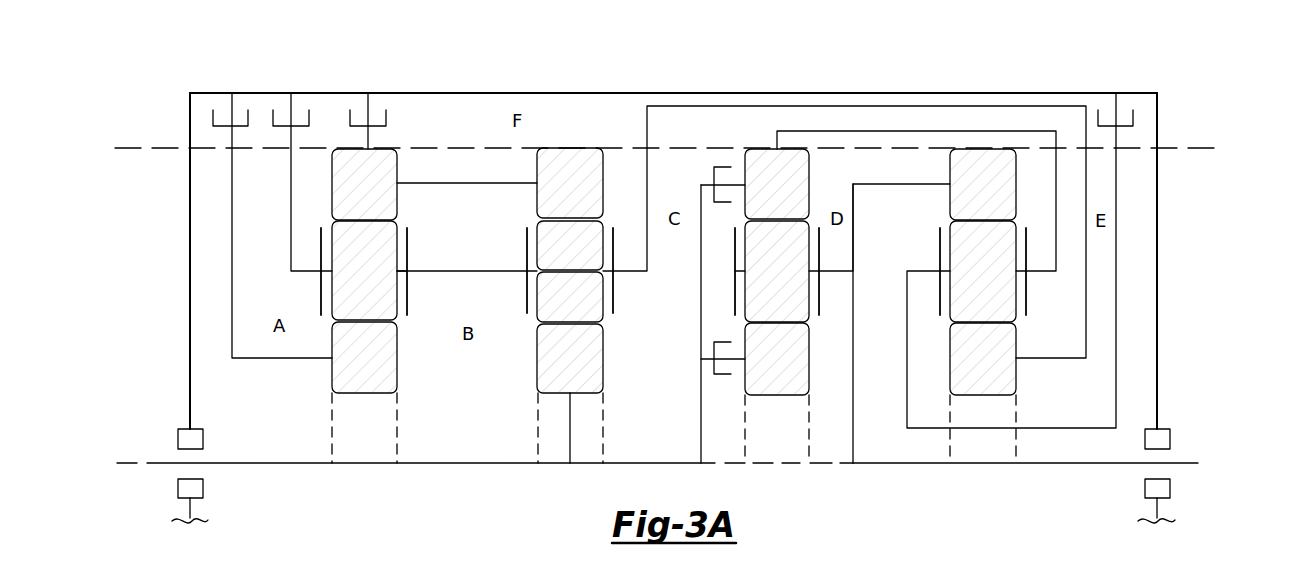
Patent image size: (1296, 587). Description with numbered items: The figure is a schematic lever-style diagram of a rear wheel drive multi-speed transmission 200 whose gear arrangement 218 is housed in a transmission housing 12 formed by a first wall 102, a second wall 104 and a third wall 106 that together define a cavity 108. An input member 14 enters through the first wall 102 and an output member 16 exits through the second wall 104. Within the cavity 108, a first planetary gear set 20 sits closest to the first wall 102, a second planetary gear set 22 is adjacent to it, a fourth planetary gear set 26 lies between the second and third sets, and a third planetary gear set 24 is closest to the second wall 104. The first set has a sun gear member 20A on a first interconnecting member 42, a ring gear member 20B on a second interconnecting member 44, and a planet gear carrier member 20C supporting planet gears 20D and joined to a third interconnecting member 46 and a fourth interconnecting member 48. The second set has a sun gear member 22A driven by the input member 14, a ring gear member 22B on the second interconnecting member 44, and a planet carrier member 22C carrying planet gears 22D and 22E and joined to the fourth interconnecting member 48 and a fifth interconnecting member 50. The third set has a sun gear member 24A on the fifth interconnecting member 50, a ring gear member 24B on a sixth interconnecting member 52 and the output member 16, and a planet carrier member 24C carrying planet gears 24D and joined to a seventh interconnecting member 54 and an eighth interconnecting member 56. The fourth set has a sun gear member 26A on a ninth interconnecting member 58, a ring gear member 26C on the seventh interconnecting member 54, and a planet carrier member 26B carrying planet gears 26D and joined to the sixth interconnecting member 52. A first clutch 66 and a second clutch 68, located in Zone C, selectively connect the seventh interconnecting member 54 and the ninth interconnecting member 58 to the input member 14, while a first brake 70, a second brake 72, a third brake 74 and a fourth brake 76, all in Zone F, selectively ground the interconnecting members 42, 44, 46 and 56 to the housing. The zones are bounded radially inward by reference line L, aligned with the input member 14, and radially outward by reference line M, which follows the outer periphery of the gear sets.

The transmission housing 12 is at (1157, 243).
The input shaft or member 14 is at (168, 462).
The output shaft or member 16 is at (1115, 466).
The first planetary gear set 20 is at (396, 348).
The sun gear member 20A is at (377, 371).
The ring gear member 20B is at (377, 197).
The planet gear carrier member 20C is at (408, 237).
The planet gears 20D is at (377, 282).
The second planetary gear set 22 is at (583, 348).
The sun gear member 22A is at (583, 371).
The ring gear member 22B is at (583, 196).
The planet carrier member 22C is at (614, 232).
The planet gears 22D is at (583, 257).
The planet gears 22E is at (583, 309).
The third planetary gear set 24 is at (1007, 348).
The sun gear member 24A is at (996, 372).
The ring gear member 24B is at (996, 197).
The planet carrier member 24C is at (1026, 287).
The planet gears 24D is at (996, 283).
The fourth planetary gear set 26 is at (790, 348).
The sun gear member 26A is at (790, 372).
The planet carrier member 26B is at (820, 300).
The ring gear member 26C is at (790, 197).
The planet gears 26D is at (790, 283).
The first shaft or interconnecting member 42 is at (232, 215).
The second shaft or interconnecting member 44 is at (368, 142).
The third shaft or interconnecting member 46 is at (291, 197).
The fourth shaft or interconnecting member 48 is at (505, 273).
The fifth shaft or interconnecting member 50 is at (680, 106).
The sixth shaft or interconnecting member 52 is at (838, 270).
The seventh shaft or interconnecting member 54 is at (846, 131).
The eighth shaft or interconnecting member 56 is at (1116, 196).
The ninth shaft or interconnecting member 58 is at (742, 380).
The first clutch 66 is at (714, 178).
The second clutch 68 is at (714, 348).
The first brake 70 is at (213, 120).
The second brake 72 is at (386, 118).
The third brake 74 is at (309, 118).
The fourth brake 76 is at (1133, 118).
The first wall or structural member 102 is at (190, 262).
The second wall or structural member 104 is at (1157, 337).
The third wall or structural member 106 is at (558, 93).
The space or cavity 108 is at (1127, 371).
The transmission 200 is at (1182, 82).
The gear arrangement 218 is at (1128, 308).
The reference line M is at (1210, 150).
The reference line L is at (1212, 462).